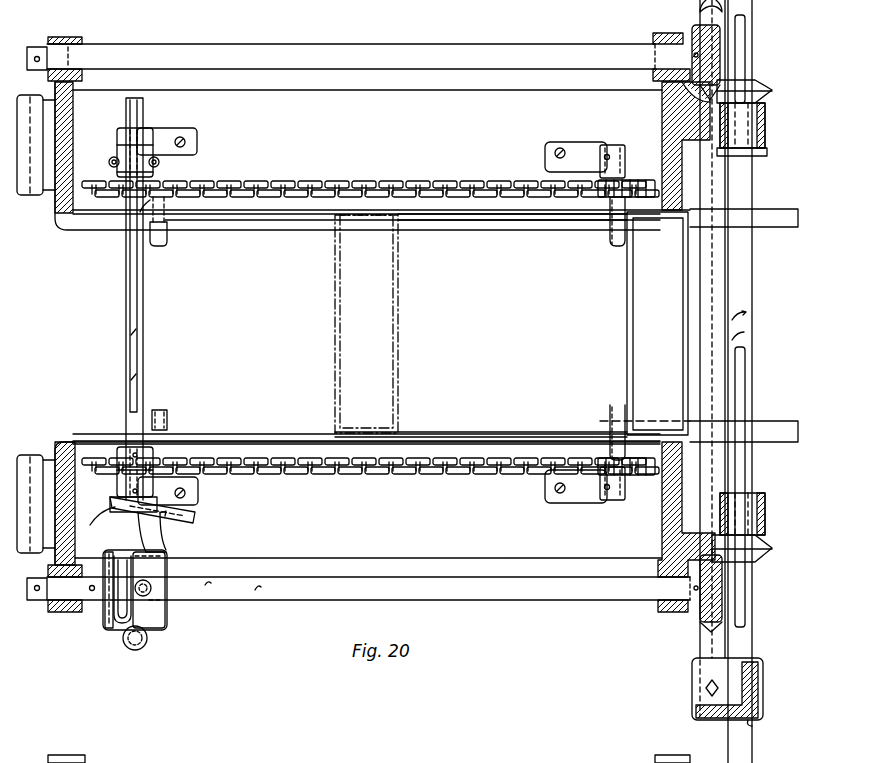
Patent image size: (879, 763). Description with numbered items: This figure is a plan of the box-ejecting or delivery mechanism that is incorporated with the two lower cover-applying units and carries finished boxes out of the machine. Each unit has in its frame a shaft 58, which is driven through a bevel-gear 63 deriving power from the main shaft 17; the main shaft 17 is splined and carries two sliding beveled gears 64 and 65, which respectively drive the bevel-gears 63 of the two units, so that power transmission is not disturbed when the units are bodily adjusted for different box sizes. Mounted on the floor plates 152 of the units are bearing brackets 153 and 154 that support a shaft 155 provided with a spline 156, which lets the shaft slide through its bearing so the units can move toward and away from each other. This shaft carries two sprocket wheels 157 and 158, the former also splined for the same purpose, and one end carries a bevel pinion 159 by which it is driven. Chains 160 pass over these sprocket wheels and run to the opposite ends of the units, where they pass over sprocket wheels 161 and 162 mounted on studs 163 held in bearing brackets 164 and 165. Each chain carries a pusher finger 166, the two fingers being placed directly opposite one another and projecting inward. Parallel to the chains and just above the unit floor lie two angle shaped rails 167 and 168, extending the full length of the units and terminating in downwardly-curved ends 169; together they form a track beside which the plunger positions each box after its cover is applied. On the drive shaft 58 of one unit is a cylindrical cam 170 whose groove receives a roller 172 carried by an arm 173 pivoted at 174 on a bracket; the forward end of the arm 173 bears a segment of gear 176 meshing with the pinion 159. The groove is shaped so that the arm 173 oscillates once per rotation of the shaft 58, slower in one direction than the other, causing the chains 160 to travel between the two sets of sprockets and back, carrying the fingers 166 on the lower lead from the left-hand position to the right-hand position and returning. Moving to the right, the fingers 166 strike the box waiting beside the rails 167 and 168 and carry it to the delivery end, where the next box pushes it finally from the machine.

The main shaft 17 is at (745, 637).
The shaft 58 is at (467, 52).
The bevel-gear 63 is at (700, 28).
The sliding beveled gear 64 is at (768, 545).
The sliding beveled gear 65 is at (770, 97).
The floor plate 152 is at (345, 331).
The bearing bracket 153 is at (190, 491).
The bearing bracket 154 is at (190, 138).
The shaft 155 is at (127, 118).
The spline 156 is at (130, 318).
The sprocket wheel 157 is at (118, 188).
The sprocket wheel 158 is at (112, 462).
The bevel pinion 159 is at (119, 519).
The chain 160 is at (412, 182).
The sprocket wheel 161 is at (628, 478).
The sprocket wheel 162 is at (627, 182).
The stud 163 is at (604, 146).
The bearing bracket 164 is at (548, 152).
The bearing bracket 165 is at (568, 498).
The pusher finger 166 is at (612, 236).
The angle shaped rail 167 is at (458, 216).
The angle shaped rail 168 is at (462, 436).
The downwardly-curved end 169 is at (760, 218).
The cylindrical cam 170 is at (103, 625).
The roller 172 is at (168, 600).
The arm 173 is at (155, 543).
The pivot 174 is at (146, 648).
The segment of gear 176 is at (195, 516).